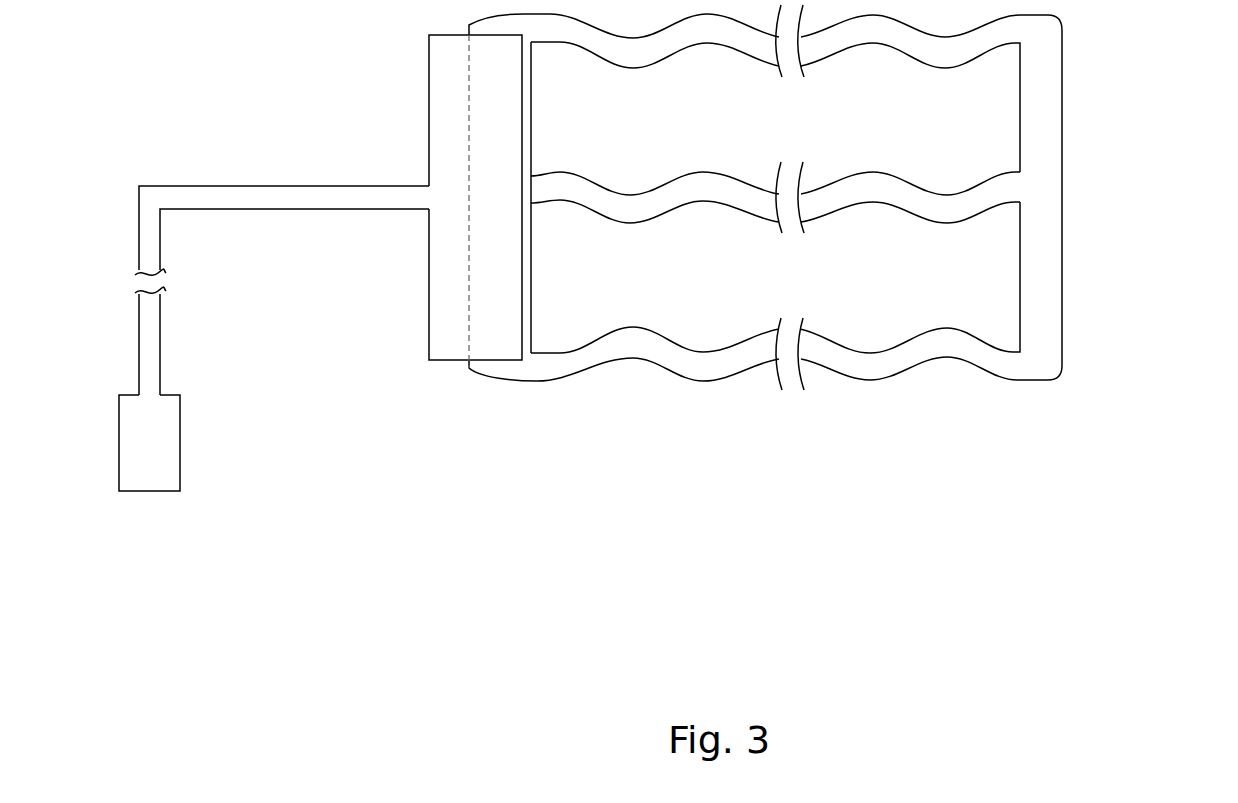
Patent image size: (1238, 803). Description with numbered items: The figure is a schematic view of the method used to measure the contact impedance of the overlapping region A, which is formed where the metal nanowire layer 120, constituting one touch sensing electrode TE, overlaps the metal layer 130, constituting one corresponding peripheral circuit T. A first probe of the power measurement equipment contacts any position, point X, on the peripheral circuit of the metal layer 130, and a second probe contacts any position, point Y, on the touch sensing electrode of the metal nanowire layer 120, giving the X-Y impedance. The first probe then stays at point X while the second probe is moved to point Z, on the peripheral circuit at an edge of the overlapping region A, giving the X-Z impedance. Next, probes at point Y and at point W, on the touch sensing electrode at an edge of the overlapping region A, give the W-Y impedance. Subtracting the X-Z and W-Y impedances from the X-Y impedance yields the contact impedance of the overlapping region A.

The metal nanowire layer 120 is at (843, 197).
The metal layer 130 is at (300, 263).
The point X is at (150, 354).
The point Y is at (873, 185).
The point Z is at (469, 198).
The point W is at (522, 198).
The overlapping region A is at (508, 208).